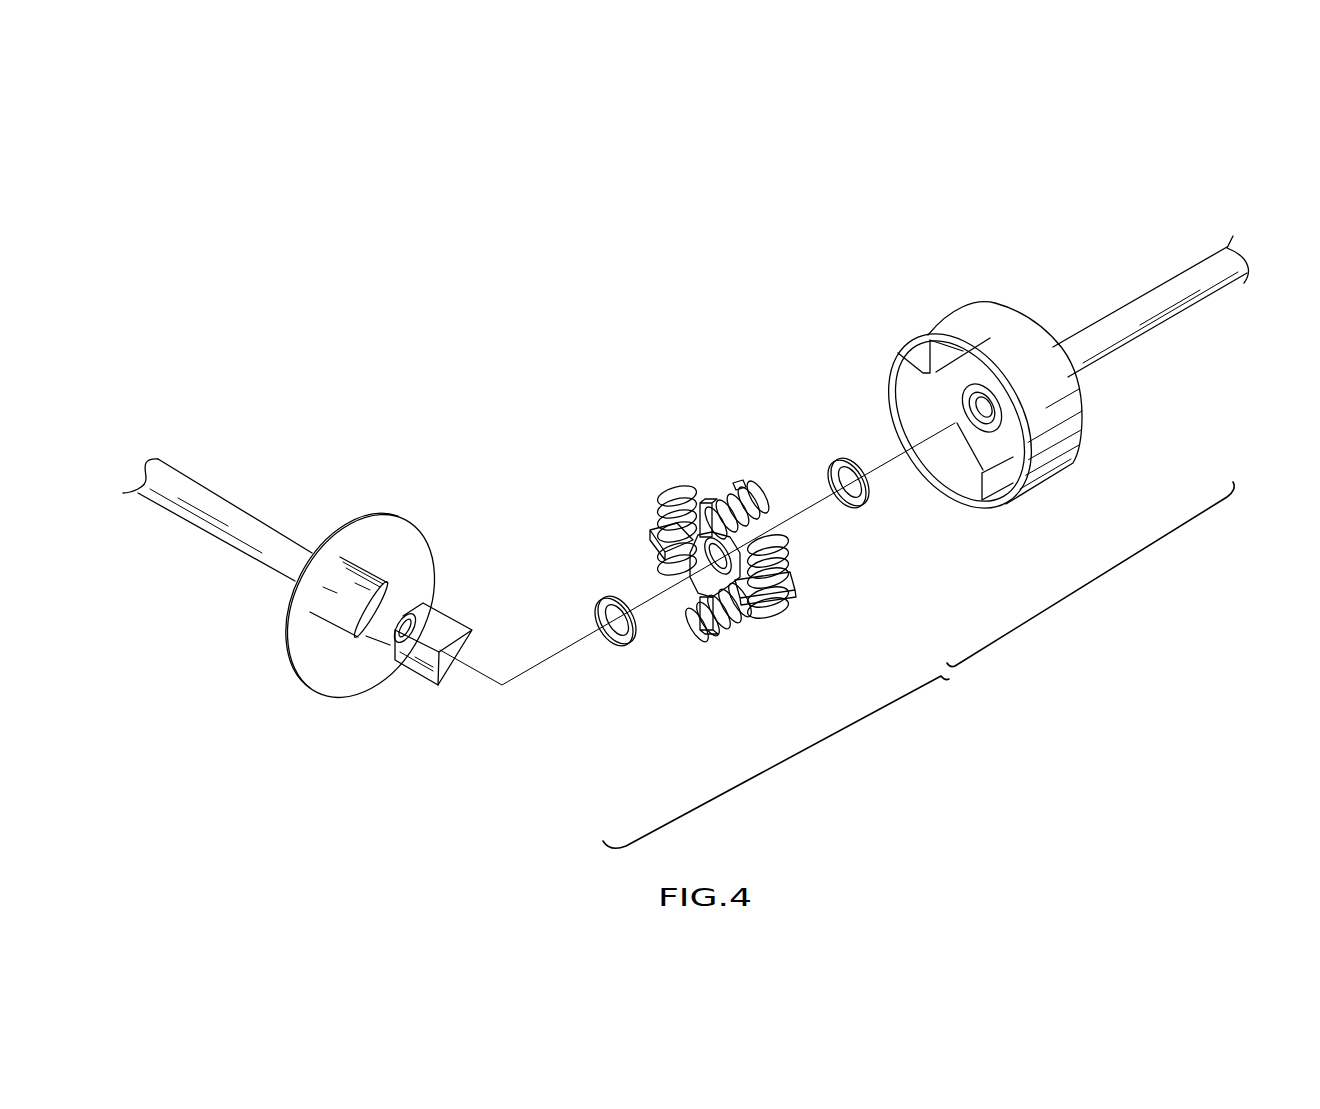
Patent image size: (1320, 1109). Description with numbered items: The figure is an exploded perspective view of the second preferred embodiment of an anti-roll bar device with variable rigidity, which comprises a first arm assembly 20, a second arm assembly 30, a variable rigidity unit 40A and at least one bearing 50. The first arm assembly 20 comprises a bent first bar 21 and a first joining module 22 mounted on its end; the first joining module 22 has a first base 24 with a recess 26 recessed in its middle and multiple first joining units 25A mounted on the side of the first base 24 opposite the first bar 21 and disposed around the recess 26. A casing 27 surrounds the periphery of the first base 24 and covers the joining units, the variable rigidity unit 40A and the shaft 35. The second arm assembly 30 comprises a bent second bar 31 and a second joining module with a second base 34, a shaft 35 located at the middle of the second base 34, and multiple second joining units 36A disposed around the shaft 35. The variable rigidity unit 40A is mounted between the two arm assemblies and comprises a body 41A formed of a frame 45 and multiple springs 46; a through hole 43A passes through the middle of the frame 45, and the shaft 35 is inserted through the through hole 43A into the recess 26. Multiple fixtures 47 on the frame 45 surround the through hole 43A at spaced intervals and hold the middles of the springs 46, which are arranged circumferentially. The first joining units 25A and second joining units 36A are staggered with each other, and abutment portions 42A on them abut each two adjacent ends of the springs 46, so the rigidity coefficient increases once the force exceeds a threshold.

The first arm assembly 20 is at (1203, 340).
The first bar 21 is at (1153, 297).
The first joining module 22 is at (953, 289).
The first base 24 is at (985, 448).
The first joining unit 25A is at (898, 357).
The recess 26 is at (980, 405).
The casing 27 is at (937, 332).
The second arm assembly 30 is at (195, 552).
The second bar 31 is at (248, 530).
The second base 34 is at (392, 540).
The shaft 35 is at (394, 630).
The second joining unit 36A is at (418, 663).
The variable rigidity unit 40A is at (631, 460).
The body 41A is at (747, 541).
The abutment portion 42A is at (443, 622).
The through hole 43A is at (708, 610).
The frame 45 is at (730, 610).
The spring 46 is at (702, 480).
The fixture 47 is at (655, 542).
The bearing 50 is at (608, 597).